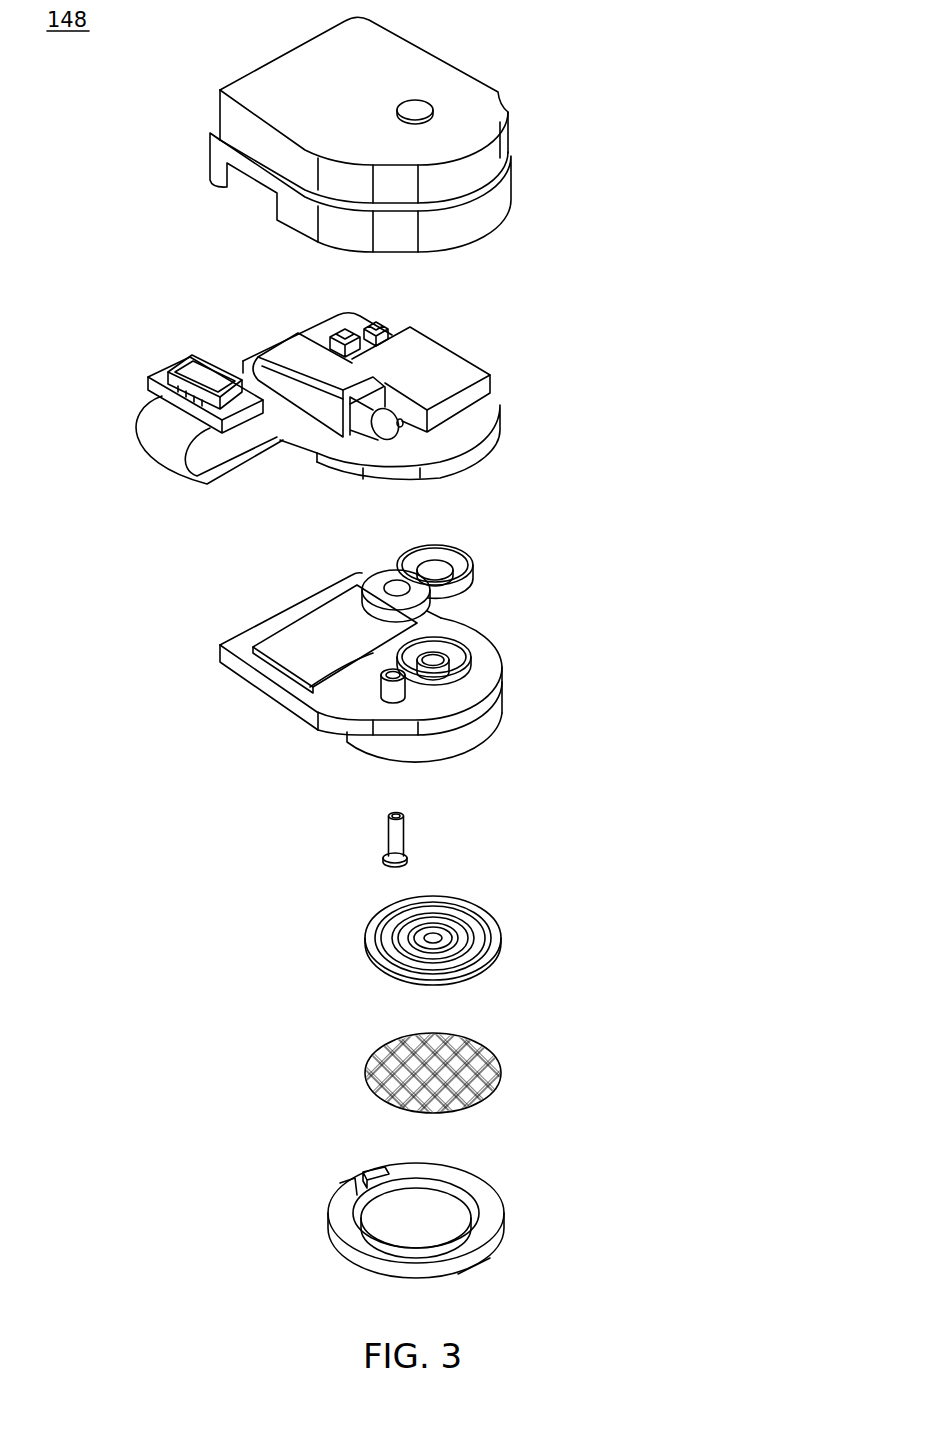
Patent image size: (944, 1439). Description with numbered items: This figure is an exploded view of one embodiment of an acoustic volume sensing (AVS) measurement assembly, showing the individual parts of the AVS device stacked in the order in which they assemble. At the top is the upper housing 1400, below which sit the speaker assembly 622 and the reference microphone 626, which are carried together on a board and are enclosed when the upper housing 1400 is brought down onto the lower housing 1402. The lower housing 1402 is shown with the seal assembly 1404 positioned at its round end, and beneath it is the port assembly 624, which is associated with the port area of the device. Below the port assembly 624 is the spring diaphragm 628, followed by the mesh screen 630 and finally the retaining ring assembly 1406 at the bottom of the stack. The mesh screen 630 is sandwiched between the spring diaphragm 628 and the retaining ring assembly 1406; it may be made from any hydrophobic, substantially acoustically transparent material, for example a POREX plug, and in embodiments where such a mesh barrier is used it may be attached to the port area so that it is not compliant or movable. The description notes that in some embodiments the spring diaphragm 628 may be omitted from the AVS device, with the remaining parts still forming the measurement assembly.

The upper housing 1400 is at (460, 87).
The speaker assembly 622 is at (292, 346).
The reference microphone 626 is at (442, 364).
The lower housing 1402 is at (236, 648).
The seal assembly 1404 is at (466, 557).
The port assembly 624 is at (392, 835).
The spring diaphragm 628 is at (498, 928).
The mesh screen 630 is at (500, 1073).
The retaining ring assembly 1406 is at (485, 1185).